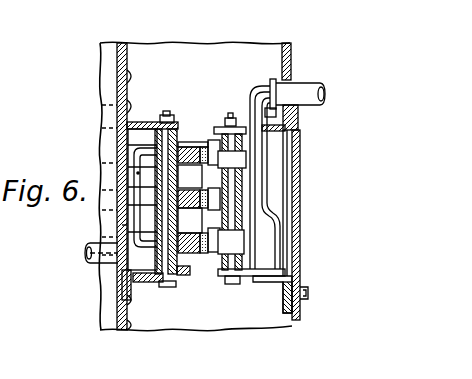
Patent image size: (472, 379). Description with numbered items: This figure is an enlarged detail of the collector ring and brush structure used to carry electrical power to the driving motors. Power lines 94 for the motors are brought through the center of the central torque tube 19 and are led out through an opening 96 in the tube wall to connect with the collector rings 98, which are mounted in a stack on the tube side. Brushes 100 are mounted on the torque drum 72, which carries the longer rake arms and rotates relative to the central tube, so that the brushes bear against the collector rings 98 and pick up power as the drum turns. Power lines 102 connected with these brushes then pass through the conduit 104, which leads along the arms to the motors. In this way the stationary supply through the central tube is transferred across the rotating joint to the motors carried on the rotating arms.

The conduit 104 is at (308, 85).
The collector rings 98 is at (190, 128).
The brushes 100 is at (216, 127).
The power lines 94 is at (136, 172).
The central torque tube 19 is at (120, 224).
The opening 96 is at (118, 264).
The power lines 102 is at (264, 276).
The torque drum 72 is at (299, 318).